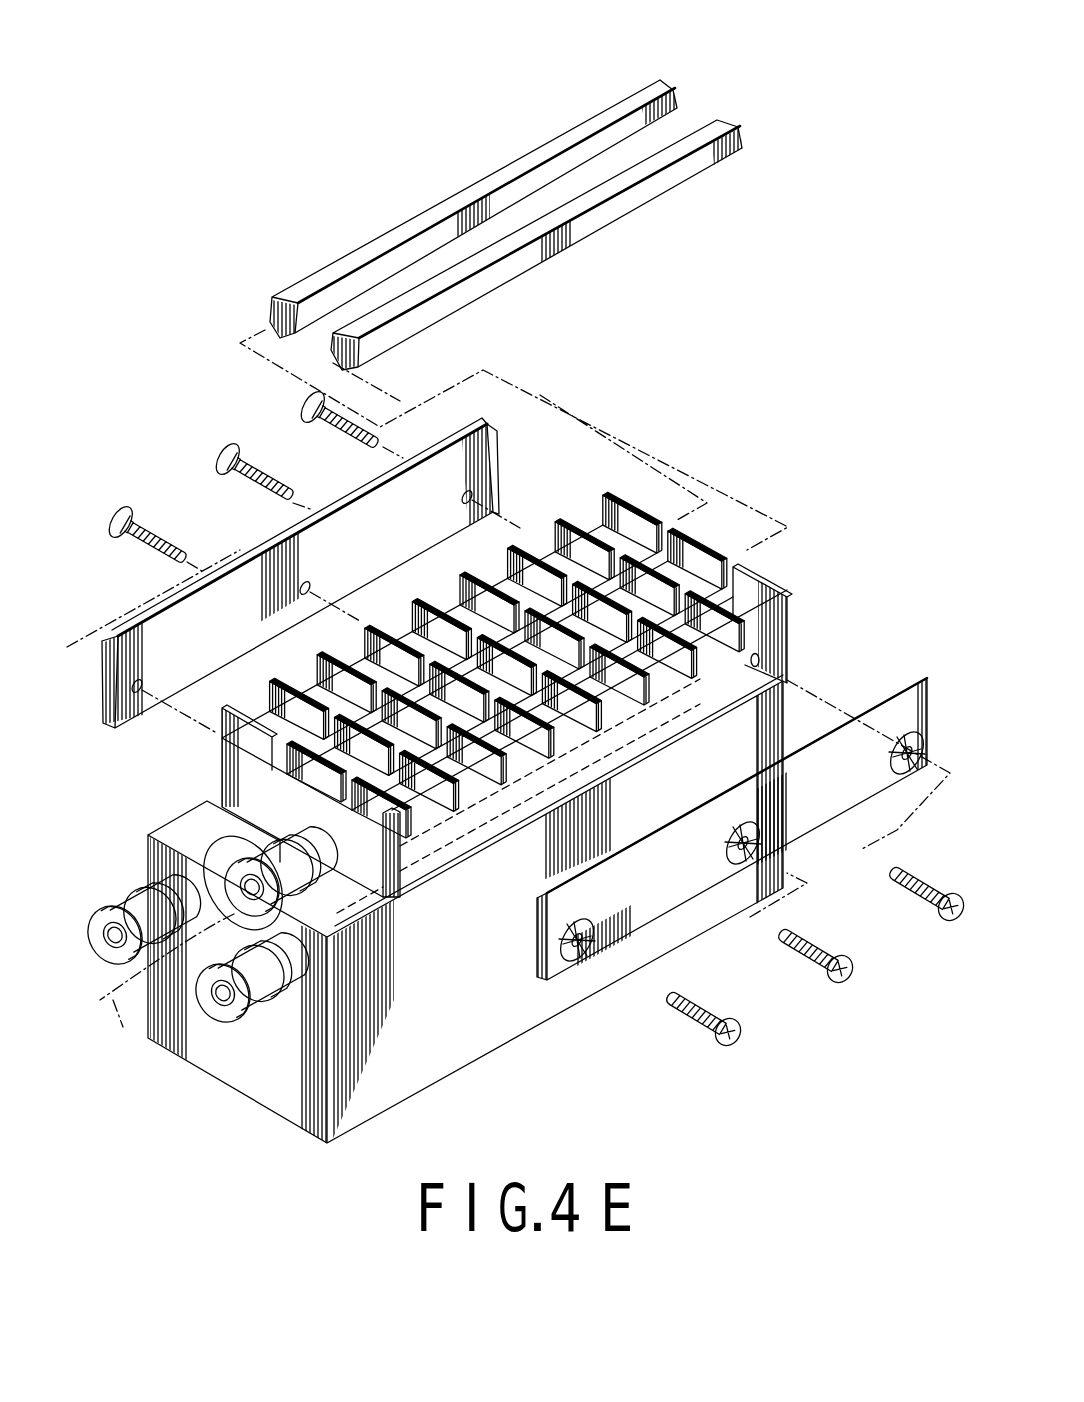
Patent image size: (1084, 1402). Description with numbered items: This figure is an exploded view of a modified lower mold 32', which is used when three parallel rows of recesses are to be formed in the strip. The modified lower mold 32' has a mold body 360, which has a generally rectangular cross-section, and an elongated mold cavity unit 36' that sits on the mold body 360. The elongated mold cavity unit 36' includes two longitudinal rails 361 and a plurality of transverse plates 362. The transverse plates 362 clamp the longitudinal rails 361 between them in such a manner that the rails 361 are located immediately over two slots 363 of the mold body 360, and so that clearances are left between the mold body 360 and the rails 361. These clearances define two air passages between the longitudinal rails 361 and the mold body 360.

The longitudinal rails 361 is at (733, 117).
The transverse plates 362 is at (547, 547).
The elongated mold cavity unit 36' is at (507, 694).
The slots 363 is at (215, 812).
The mold body 360 is at (509, 1017).
The modified lower mold 32' is at (752, 905).